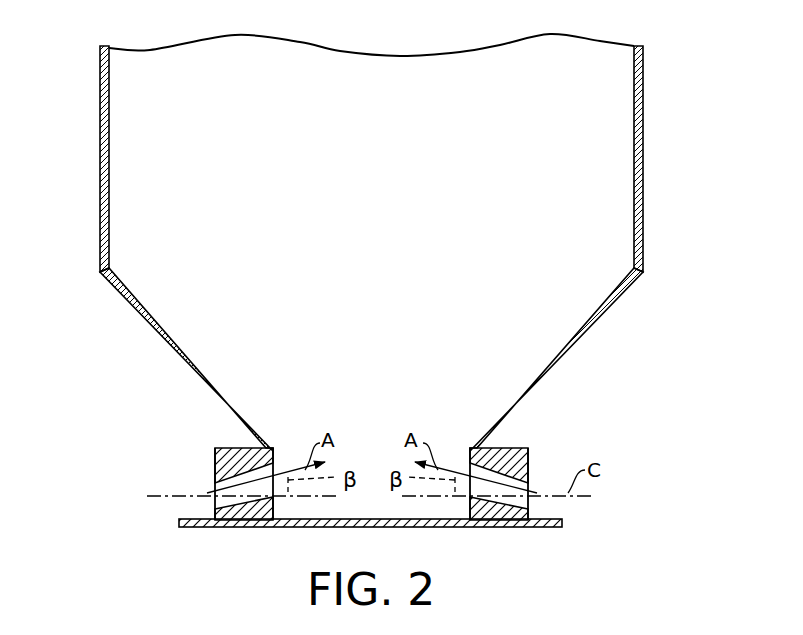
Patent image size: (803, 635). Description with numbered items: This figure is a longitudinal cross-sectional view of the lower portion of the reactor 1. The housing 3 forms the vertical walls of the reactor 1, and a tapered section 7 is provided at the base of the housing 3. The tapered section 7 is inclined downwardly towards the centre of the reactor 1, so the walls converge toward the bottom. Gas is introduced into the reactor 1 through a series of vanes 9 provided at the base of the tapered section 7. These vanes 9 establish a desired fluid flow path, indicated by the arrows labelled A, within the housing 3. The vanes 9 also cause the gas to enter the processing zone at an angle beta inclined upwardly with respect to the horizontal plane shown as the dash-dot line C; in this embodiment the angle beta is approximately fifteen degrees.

The reactor 1 is at (640, 383).
The housing 3 is at (100, 165).
The tapered section 7 is at (165, 345).
The vanes 9 is at (213, 482).